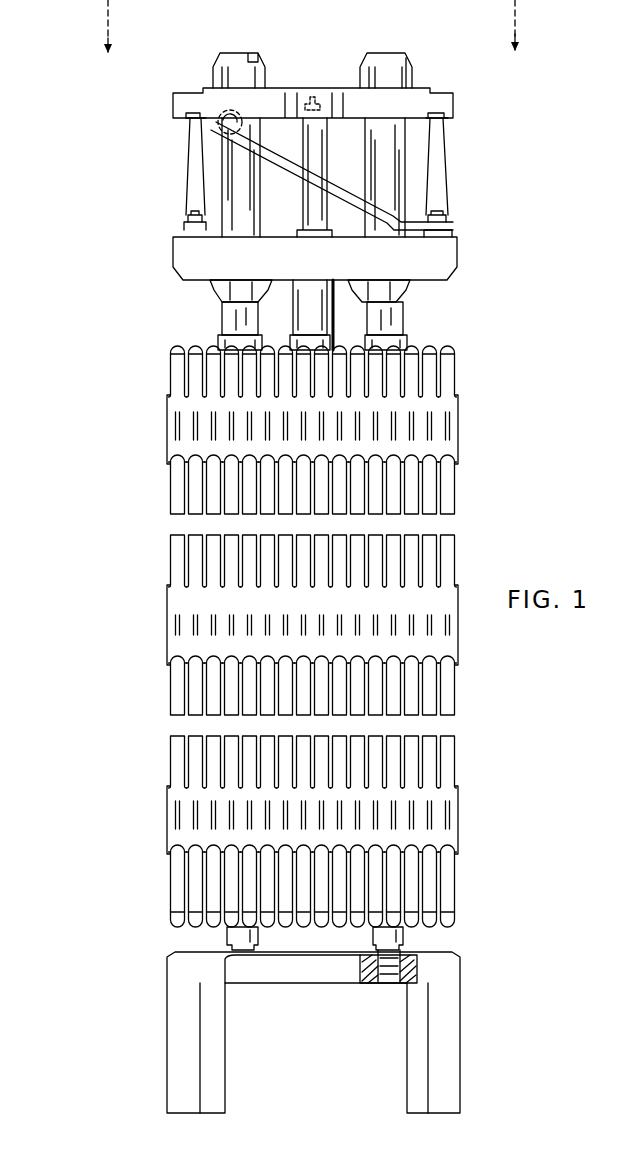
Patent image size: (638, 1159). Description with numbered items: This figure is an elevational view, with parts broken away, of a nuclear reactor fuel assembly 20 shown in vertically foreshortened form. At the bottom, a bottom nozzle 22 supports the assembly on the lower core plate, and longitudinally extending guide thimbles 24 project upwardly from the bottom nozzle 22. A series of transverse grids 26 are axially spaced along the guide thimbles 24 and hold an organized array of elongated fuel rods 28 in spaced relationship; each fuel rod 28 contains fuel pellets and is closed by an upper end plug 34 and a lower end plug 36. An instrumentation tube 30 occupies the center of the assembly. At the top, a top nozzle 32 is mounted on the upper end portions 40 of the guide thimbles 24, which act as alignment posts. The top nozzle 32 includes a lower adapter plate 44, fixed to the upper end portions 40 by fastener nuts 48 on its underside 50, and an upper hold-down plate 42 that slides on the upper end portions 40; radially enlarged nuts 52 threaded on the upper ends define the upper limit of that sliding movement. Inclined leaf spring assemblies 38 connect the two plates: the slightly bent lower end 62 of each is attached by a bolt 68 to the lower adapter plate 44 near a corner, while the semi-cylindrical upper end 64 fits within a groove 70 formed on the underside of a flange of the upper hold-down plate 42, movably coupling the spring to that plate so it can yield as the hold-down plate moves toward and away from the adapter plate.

The fuel assembly 20 is at (515, 320).
The bottom nozzle 22 is at (461, 1015).
The guide thimbles 24 is at (218, 340).
The transverse grids 26 is at (459, 425).
The fuel rods 28 is at (200, 752).
The instrumentation tube 30 is at (307, 296).
The top nozzle 32 is at (156, 97).
The upper end plug 34 is at (176, 354).
The lower end plug 36 is at (182, 914).
The leaf spring assembly 38 is at (184, 171).
The upper end portions of the guide thimbles 40 is at (224, 312).
The upper hold-down plate 42 is at (458, 100).
The lower adapter plate 44 is at (171, 252).
The fastener nuts 48 is at (212, 285).
The underside of the lower adapter plate 50 is at (341, 283).
The radially enlarged nuts 52 is at (360, 78).
The lower end of the leaf spring assembly 62 is at (181, 226).
The upper end of the leaf spring assembly 64 is at (211, 132).
The bolt 68 is at (195, 212).
The groove 70 is at (194, 121).